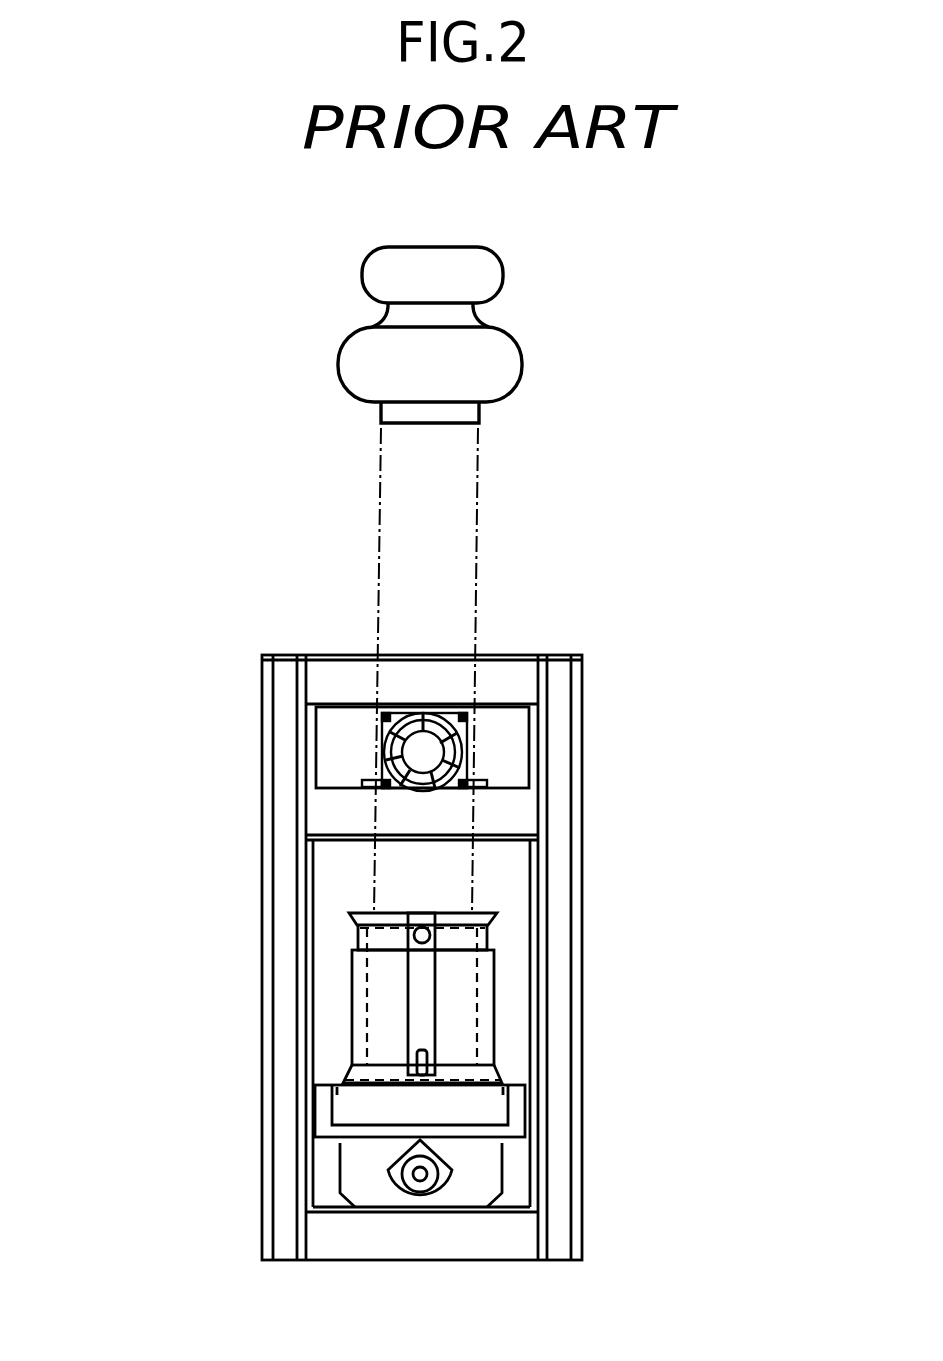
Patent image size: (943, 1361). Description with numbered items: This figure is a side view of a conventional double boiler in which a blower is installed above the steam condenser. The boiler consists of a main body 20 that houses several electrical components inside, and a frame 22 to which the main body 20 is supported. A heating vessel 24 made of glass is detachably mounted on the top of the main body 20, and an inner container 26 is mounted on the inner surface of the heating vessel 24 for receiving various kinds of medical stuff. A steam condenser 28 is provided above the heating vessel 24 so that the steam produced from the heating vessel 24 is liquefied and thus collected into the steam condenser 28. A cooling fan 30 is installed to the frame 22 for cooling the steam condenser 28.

The main body 20 is at (493, 1193).
The frame 22 is at (568, 915).
The heating vessel 24 is at (488, 1043).
The inner container 26 is at (370, 1013).
The steam condenser 28 is at (510, 364).
The cooling fan 30 is at (463, 720).